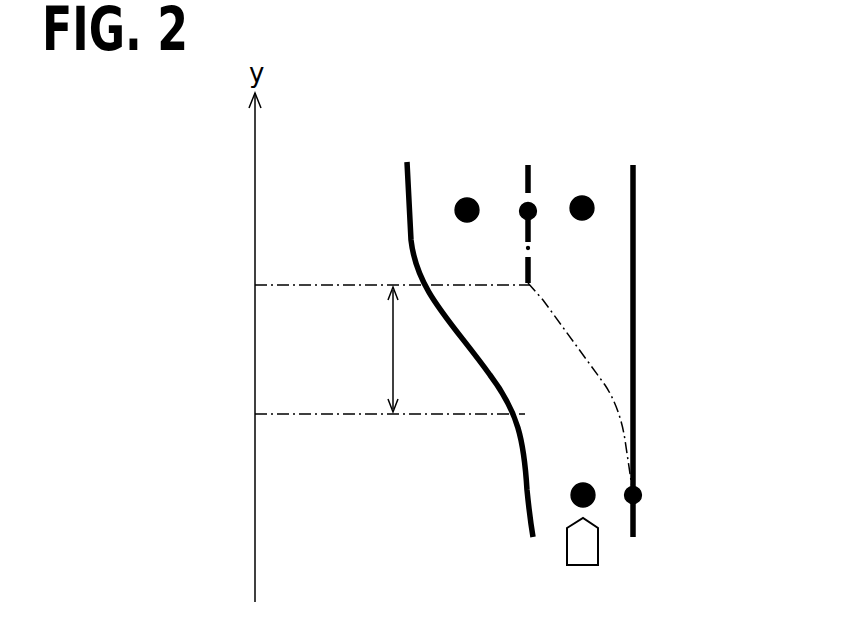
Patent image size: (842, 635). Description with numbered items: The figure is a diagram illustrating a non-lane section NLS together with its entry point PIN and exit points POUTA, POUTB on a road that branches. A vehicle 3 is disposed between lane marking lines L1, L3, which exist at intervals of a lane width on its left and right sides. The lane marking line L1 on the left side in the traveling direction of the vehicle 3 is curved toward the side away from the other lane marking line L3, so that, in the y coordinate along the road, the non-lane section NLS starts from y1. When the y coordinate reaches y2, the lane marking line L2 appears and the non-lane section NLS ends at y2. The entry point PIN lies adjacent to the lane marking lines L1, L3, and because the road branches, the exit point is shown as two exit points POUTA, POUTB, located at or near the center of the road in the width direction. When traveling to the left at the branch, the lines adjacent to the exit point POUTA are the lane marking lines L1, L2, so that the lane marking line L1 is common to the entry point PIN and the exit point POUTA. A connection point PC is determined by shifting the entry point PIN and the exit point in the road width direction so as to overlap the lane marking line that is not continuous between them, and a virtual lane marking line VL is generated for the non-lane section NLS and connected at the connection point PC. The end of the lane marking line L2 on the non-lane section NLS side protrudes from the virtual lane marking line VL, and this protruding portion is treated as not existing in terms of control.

The vehicle 3 is at (598, 548).
The lane marking line L1 is at (407, 238).
The lane marking line L2 is at (523, 169).
The lane marking line L3 is at (633, 223).
The connection point PC is at (534, 214).
The entry point PIN is at (571, 492).
The exit point POUTA is at (463, 198).
The exit point POUTB is at (592, 203).
The virtual lane marking line VL is at (605, 385).
The non-lane section NLS is at (368, 349).
The y coordinate y1 is at (369, 411).
The y coordinate y2 is at (371, 282).